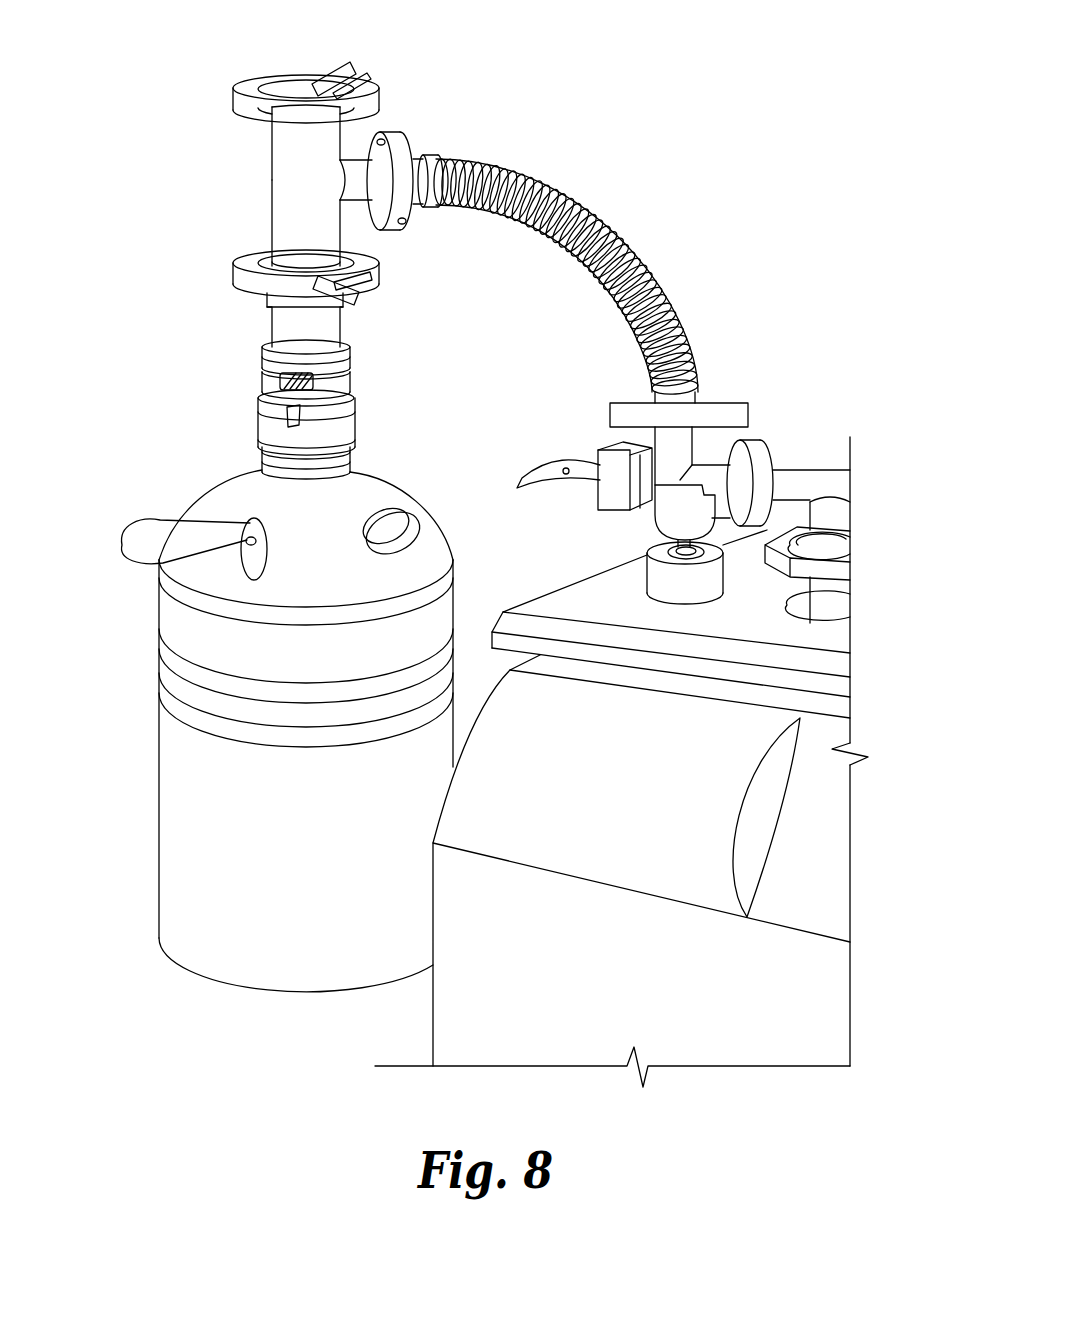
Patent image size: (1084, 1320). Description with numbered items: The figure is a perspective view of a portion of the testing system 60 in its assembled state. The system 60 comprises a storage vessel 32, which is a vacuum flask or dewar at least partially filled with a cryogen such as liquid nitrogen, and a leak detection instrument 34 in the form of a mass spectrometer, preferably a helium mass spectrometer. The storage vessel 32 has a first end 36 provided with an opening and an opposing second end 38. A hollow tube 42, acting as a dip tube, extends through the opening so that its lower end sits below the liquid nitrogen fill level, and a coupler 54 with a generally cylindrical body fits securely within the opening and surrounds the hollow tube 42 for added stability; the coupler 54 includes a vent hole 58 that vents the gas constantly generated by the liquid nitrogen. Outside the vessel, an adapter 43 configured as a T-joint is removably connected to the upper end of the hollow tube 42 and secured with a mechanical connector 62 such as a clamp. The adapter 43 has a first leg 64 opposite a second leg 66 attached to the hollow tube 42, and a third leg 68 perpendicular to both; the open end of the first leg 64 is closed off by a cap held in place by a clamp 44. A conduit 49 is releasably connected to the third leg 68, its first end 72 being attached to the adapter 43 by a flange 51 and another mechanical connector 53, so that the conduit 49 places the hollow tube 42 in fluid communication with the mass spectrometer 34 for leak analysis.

The storage vessel 32 is at (173, 793).
The leak detection instrument 34 is at (737, 747).
The first end 36 is at (210, 495).
The second end 38 is at (233, 970).
The hollow tube 42 is at (280, 335).
The adapter 43 is at (293, 157).
The clamp 44 is at (253, 88).
The conduit 49 is at (617, 220).
The hose flange 51 is at (405, 153).
The mechanical connector 53 is at (688, 397).
The coupler 54 is at (347, 430).
The vent hole 58 is at (277, 412).
The system 60 is at (592, 103).
The mechanical connector 62 is at (370, 275).
The first leg 64 is at (282, 125).
The second leg 66 is at (287, 237).
The third leg 68 is at (368, 162).
The first end 72 is at (425, 205).